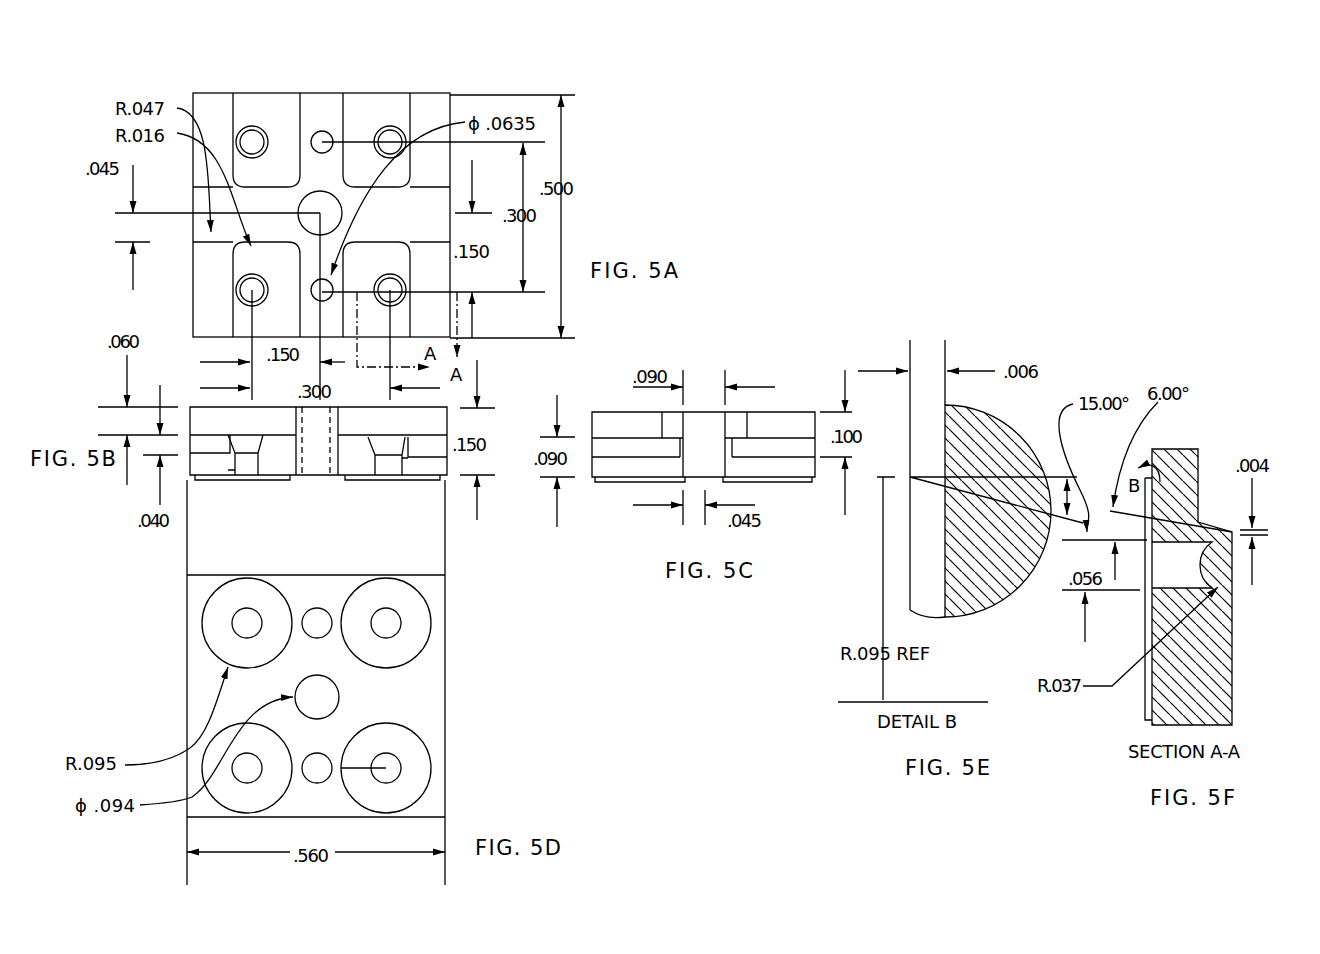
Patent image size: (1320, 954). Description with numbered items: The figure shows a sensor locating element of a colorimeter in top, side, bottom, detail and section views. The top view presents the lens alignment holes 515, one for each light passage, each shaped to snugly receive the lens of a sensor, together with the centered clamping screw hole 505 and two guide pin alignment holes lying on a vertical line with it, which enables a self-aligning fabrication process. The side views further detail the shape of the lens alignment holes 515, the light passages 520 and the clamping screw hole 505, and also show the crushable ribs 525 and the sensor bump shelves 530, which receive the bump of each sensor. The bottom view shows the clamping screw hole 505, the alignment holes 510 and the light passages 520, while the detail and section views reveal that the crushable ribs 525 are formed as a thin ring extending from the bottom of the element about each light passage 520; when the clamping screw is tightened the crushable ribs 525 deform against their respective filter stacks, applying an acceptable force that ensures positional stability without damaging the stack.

In FIG. 5C, the clamping screw hole 505 is at (703, 445).
In FIG. 5D, the alignment holes 510 is at (325, 760).
In FIG. 5A, the lens alignment holes 515 is at (268, 116).
In FIG. 5B, the light passages 520 is at (562, 702).
In FIG. 5D, the light passages 520 is at (562, 702).
In FIG. 5B, the crushable ribs 525 is at (533, 650).
In FIG. 5D, the crushable ribs 525 is at (386, 768).
In FIG. 5E, the crushable ribs 525 is at (918, 468).
In FIG. 5B, the sensor bump shelves 530 is at (540, 594).